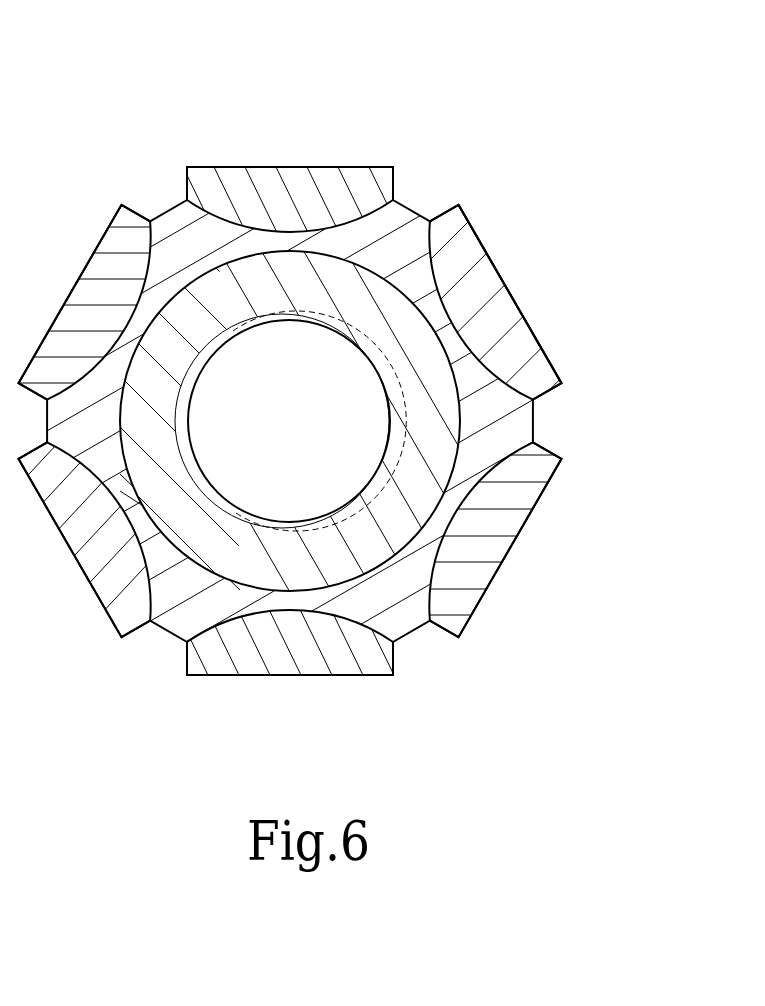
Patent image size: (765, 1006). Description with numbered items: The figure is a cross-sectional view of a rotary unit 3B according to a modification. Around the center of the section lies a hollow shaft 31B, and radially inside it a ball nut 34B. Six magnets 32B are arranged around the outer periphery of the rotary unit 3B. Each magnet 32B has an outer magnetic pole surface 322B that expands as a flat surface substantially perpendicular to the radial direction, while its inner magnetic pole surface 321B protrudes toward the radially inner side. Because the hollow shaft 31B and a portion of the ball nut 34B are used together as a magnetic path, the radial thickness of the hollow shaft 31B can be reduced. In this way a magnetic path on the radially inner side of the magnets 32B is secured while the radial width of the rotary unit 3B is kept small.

The rotary unit 3B is at (258, 115).
The hollow shaft 31B is at (187, 248).
The magnet 32B is at (498, 305).
The inner magnetic pole surface 321B is at (397, 397).
The outer magnetic pole surface 322B is at (530, 322).
The ball nut 34B is at (293, 557).